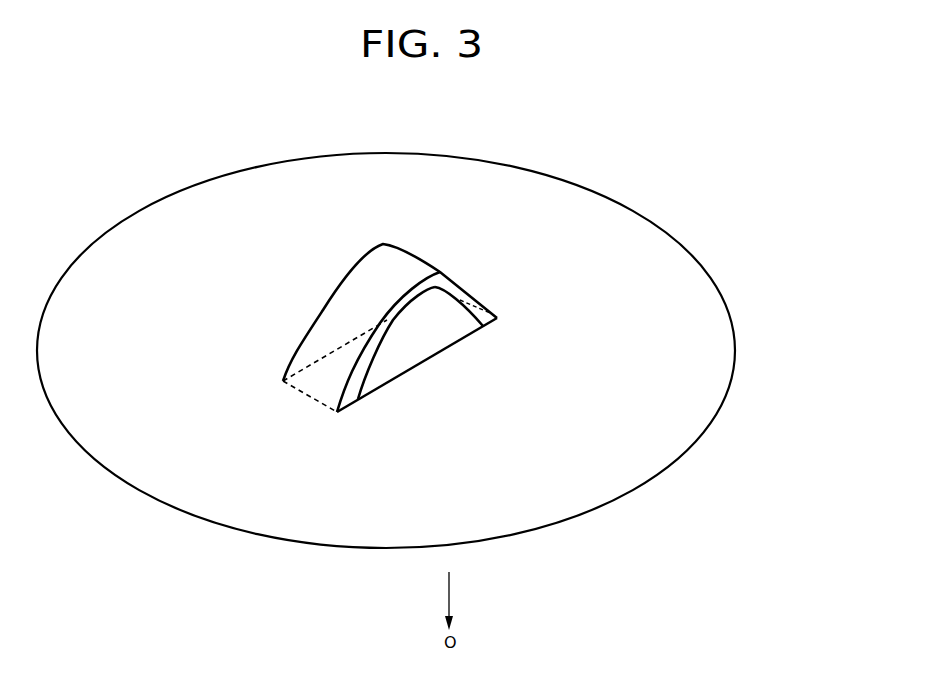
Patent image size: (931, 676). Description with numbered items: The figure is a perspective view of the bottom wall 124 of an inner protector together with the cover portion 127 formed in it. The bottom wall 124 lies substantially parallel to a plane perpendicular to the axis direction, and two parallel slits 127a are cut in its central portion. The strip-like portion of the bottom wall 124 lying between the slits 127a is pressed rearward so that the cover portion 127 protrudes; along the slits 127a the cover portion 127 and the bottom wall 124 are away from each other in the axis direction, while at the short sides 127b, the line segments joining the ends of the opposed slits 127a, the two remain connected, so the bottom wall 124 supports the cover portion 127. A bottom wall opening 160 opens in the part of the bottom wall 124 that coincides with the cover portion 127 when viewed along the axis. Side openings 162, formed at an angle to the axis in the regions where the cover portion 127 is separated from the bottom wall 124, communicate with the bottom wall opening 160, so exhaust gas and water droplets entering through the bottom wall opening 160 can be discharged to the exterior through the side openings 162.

The bottom wall 124 is at (683, 407).
The cover portion 127 is at (368, 263).
The slits 127a is at (323, 288).
The short sides 127b is at (488, 312).
The bottom wall opening 160 is at (433, 347).
The side openings 162 is at (408, 338).